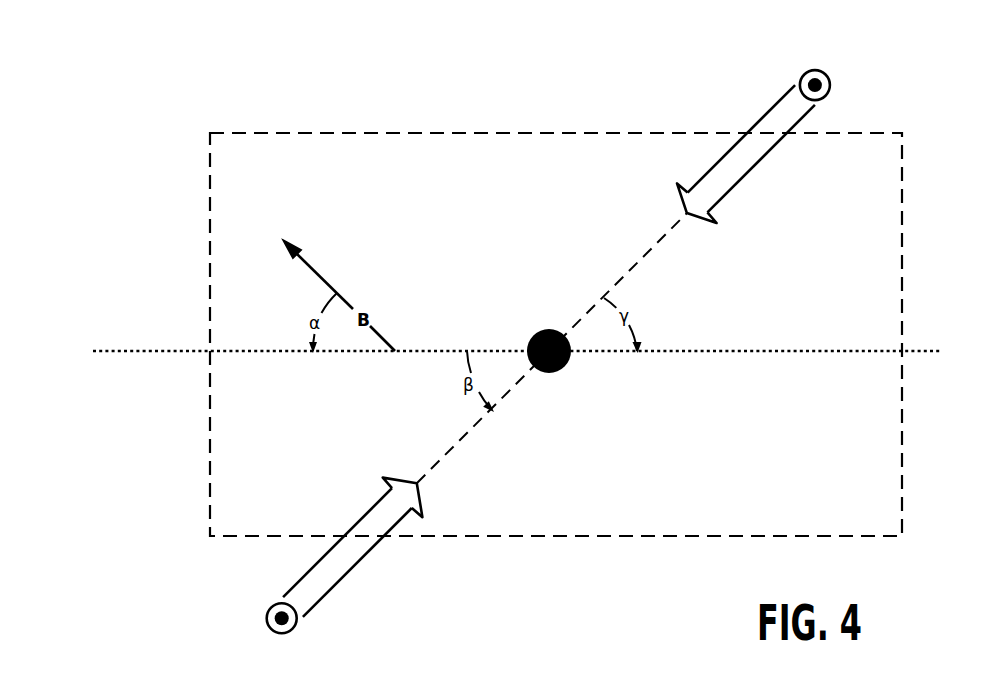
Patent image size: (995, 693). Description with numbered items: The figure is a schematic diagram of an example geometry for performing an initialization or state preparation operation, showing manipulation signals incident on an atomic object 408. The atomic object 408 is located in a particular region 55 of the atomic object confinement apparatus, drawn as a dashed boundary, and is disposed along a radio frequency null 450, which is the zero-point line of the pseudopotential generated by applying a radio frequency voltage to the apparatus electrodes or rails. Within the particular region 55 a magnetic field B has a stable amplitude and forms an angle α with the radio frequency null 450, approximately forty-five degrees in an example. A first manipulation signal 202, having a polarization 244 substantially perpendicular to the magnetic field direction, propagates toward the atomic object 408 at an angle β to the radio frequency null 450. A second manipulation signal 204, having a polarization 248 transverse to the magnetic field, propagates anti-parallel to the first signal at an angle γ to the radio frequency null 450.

The particular region 55 is at (556, 312).
The first manipulation signal 202 is at (330, 547).
The second manipulation signal 204 is at (736, 151).
The polarization 244 is at (243, 646).
The polarization 248 is at (864, 62).
The atomic object 408 is at (513, 329).
The radio frequency null 450 is at (482, 378).